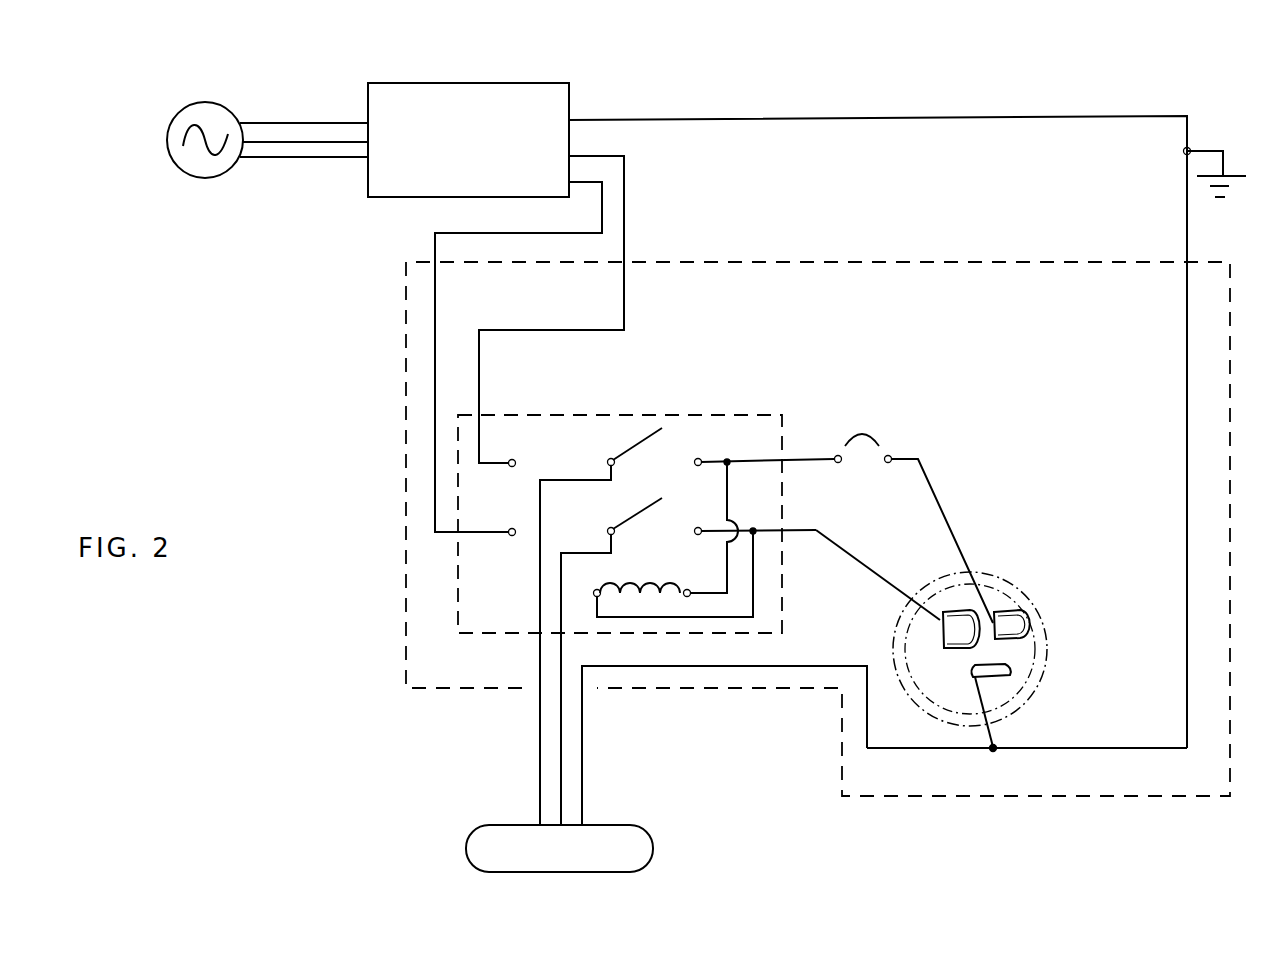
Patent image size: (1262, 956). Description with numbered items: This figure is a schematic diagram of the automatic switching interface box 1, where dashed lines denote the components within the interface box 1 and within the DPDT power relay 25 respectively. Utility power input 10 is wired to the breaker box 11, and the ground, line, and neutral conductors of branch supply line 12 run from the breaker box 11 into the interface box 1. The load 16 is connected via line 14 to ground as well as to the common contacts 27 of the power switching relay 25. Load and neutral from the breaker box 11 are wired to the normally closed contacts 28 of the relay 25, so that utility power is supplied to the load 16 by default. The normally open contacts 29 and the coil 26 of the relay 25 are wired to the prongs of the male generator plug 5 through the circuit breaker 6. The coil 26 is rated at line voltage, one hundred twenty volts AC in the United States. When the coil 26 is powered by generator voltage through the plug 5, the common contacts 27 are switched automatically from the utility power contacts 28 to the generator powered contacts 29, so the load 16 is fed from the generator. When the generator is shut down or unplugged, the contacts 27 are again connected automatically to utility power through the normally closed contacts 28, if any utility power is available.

The automatic switching interface box 1 is at (935, 256).
The male generator plug 5 is at (1069, 626).
The circuit breaker 6 is at (892, 424).
The utility power input 10 is at (208, 86).
The breaker box 11 is at (463, 68).
The branch supply line 12 is at (655, 163).
The line 14 is at (600, 753).
The load 16 is at (660, 823).
The DPDT power relay 25 is at (693, 402).
The coil 26 is at (645, 575).
The common contacts 27 is at (688, 655).
The normally closed contacts 28 is at (513, 477).
The normally open contacts 29 is at (690, 478).